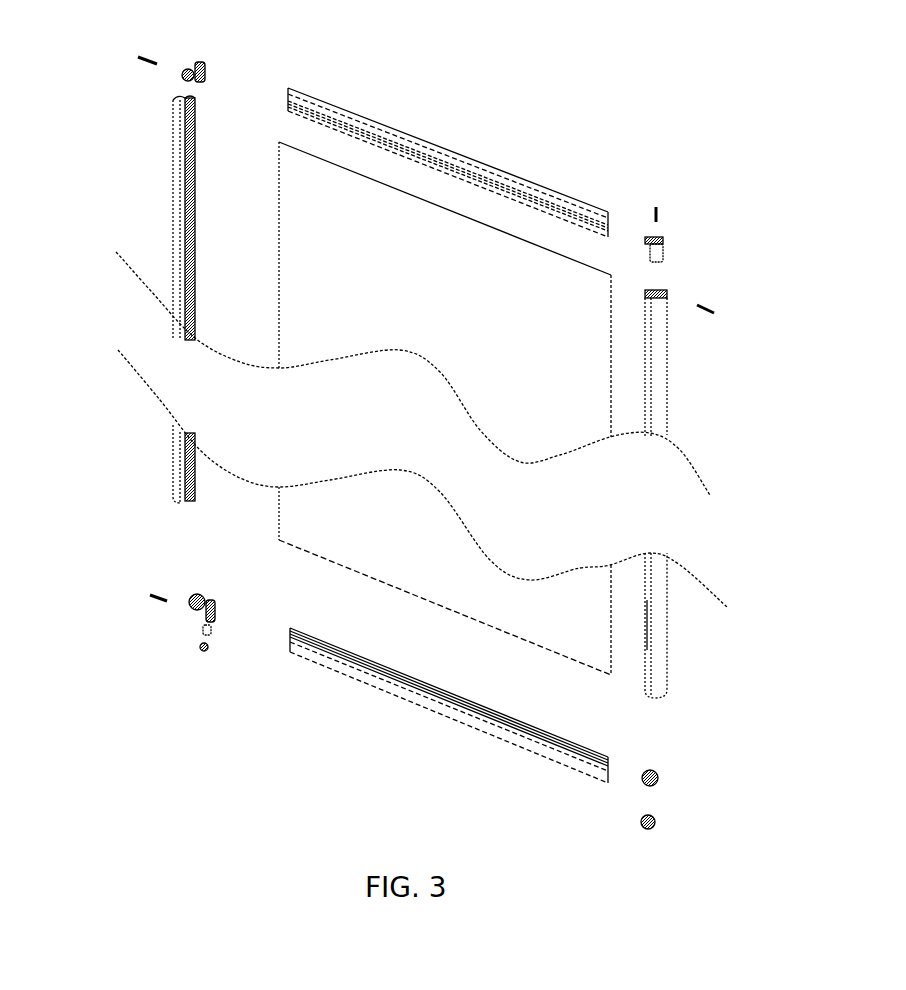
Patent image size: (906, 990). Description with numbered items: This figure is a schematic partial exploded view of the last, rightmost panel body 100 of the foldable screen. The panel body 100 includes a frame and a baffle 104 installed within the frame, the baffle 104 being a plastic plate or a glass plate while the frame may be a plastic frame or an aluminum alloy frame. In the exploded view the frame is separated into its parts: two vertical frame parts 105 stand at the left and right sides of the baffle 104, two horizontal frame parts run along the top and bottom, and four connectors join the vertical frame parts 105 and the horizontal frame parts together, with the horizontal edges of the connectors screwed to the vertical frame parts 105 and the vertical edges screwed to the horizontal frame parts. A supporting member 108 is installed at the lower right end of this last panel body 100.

The panel body 100 is at (411, 423).
The baffle 104 is at (328, 305).
The vertical frame parts 105 is at (660, 400).
The supporting member 108 is at (656, 822).